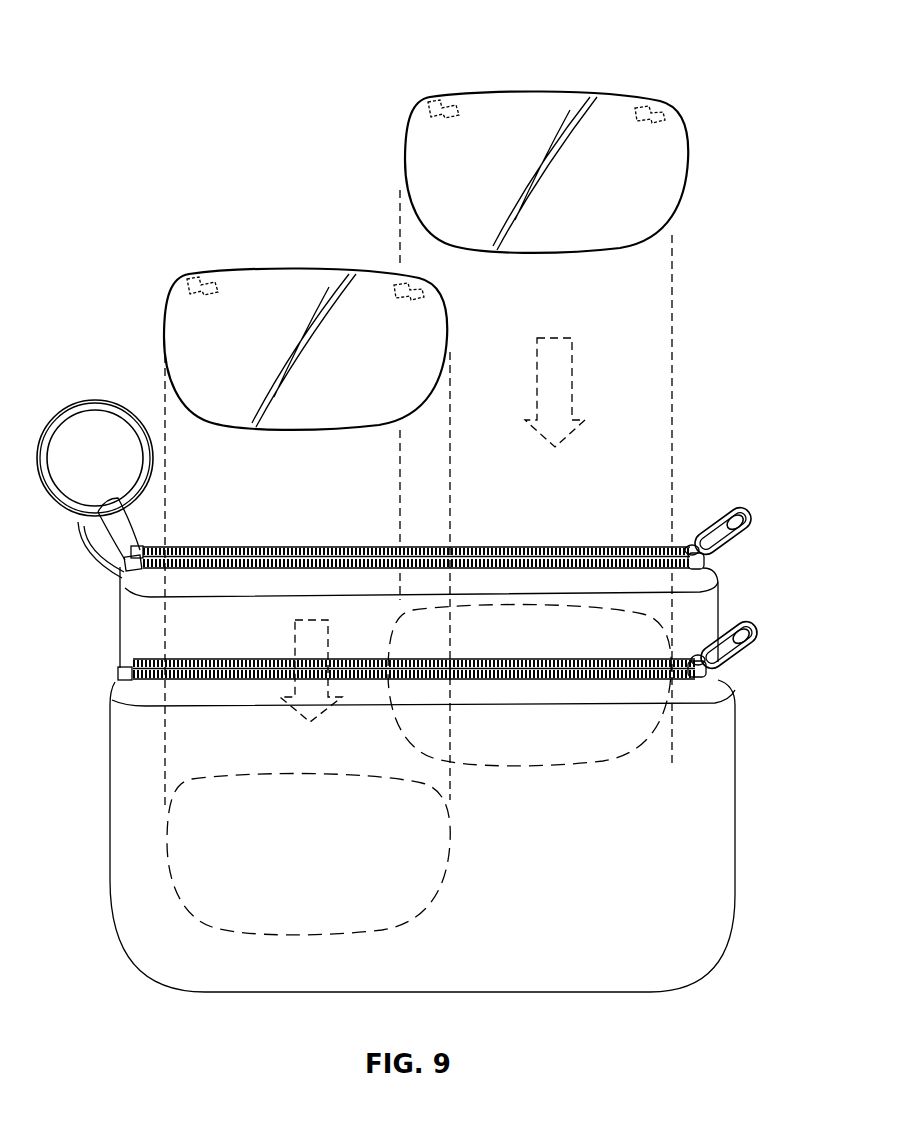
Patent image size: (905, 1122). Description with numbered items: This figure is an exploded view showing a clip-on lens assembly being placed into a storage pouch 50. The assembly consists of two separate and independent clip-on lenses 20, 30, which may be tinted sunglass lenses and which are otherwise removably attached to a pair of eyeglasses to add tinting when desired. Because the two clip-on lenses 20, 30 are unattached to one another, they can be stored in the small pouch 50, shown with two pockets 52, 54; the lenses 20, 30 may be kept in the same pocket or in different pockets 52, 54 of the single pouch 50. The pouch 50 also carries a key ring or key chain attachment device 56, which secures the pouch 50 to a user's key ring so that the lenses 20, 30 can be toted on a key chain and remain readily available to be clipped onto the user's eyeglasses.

The clip-on lens 20 is at (538, 92).
The clip-on lens 30 is at (315, 270).
The storage pouch 50 is at (735, 735).
The pocket 52 is at (615, 557).
The pocket 54 is at (240, 667).
The key ring attachment device 56 is at (100, 405).